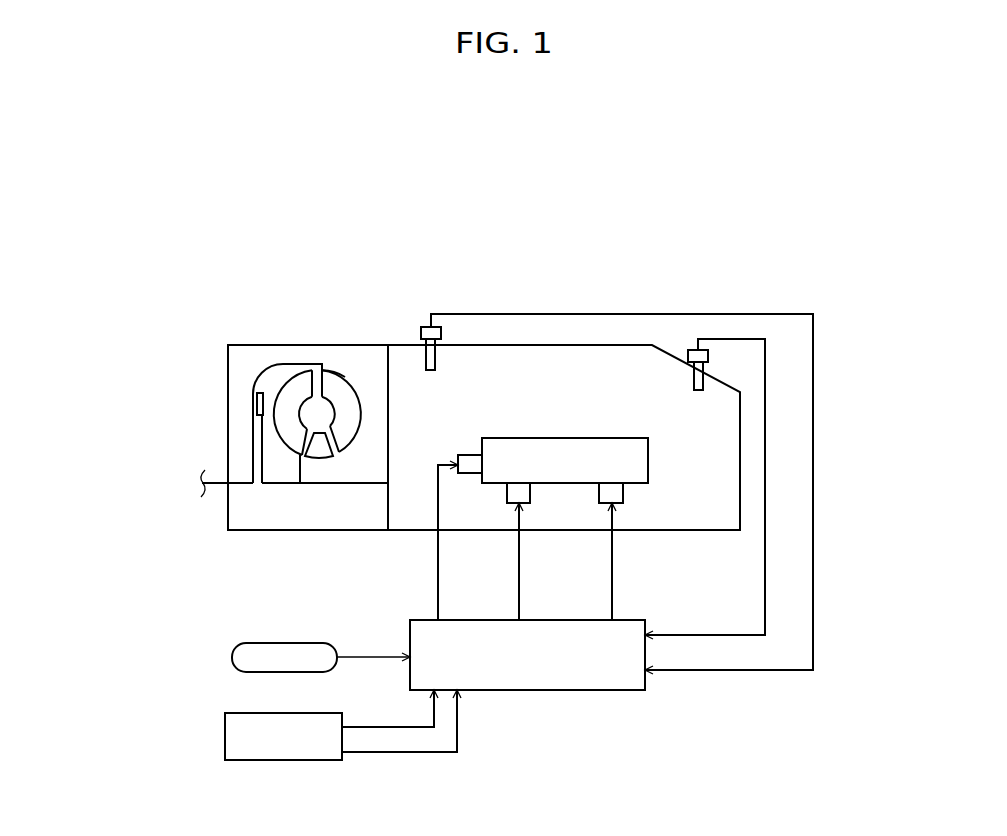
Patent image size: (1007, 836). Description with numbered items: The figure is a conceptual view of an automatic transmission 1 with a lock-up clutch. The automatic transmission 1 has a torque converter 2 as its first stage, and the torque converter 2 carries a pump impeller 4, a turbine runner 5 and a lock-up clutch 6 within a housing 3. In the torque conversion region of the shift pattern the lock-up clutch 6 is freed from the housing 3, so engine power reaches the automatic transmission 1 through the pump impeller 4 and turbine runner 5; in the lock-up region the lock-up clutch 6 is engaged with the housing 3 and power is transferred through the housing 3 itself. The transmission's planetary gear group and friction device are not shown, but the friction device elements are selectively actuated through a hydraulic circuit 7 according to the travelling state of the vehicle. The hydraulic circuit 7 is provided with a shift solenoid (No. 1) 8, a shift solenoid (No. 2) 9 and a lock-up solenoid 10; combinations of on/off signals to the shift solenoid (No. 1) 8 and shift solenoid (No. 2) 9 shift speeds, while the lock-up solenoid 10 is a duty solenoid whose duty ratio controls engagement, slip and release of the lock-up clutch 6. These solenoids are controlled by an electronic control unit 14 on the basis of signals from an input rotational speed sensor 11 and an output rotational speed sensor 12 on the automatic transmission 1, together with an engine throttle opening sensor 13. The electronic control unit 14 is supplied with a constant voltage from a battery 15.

The automatic transmission 1 is at (590, 367).
The torque converter 2 is at (228, 343).
The housing 3 is at (256, 382).
The pump impeller 4 is at (342, 377).
The turbine runner 5 is at (310, 368).
The lock-up clutch 6 is at (263, 412).
The hydraulic circuit 7 is at (648, 462).
The shift solenoid (No. 1) 8 is at (624, 495).
The shift solenoid (No. 2) 9 is at (532, 495).
The lock-up solenoid 10 is at (470, 475).
The input rotational speed sensor 11 is at (423, 322).
The output rotational speed sensor 12 is at (708, 357).
The engine throttle opening sensor 13 is at (232, 648).
The electronic control unit 14 is at (517, 690).
The battery 15 is at (225, 735).